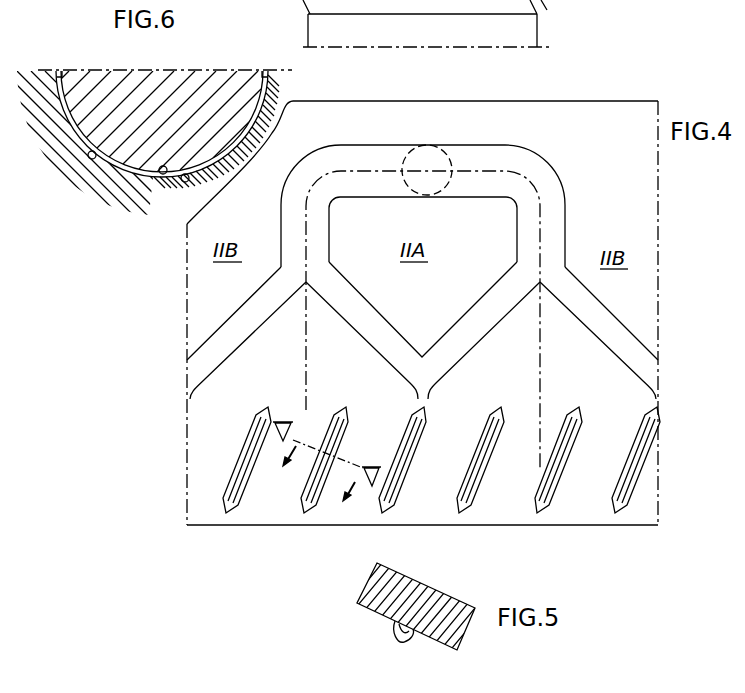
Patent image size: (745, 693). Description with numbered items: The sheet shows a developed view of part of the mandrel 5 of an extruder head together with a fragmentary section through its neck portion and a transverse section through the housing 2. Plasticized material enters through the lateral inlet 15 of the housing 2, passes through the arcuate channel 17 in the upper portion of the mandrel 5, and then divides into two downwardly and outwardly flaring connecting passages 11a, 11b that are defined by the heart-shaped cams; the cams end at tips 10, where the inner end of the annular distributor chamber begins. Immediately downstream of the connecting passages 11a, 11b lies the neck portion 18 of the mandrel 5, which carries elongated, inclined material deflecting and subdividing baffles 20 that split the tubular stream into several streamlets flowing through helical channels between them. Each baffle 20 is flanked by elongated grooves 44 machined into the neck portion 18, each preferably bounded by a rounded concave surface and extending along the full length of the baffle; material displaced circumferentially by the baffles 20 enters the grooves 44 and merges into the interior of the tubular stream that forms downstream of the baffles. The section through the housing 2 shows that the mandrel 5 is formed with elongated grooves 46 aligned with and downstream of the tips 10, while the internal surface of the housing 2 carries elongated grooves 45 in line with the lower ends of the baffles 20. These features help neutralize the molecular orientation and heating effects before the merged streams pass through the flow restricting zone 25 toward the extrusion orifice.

In FIG. 6, the housing 2 is at (82, 152).
In FIG. 6, the mandrel 5 is at (230, 75).
In FIG. 4, the tips 10 is at (414, 360).
In FIG. 4, the connecting passage 11a is at (222, 333).
In FIG. 4, the connecting passage 11b is at (622, 335).
In FIG. 4, the lateral inlet 15 is at (428, 145).
In FIG. 4, the arcuate channel 17 is at (550, 196).
In FIG. 4, the neck portion 18 is at (597, 472).
In FIG. 5, the neck portion 18 is at (436, 601).
In FIG. 4, the baffles 20 is at (419, 443).
In FIG. 5, the baffles 20 is at (397, 630).
In FIG. 4, the flow restricting zone 25 is at (545, 17).
In FIG. 4, the grooves 44 is at (241, 457).
In FIG. 5, the grooves 44 is at (412, 632).
In FIG. 6, the grooves 45 is at (95, 160).
In FIG. 4, the grooves 45 is at (447, 7).
In FIG. 6, the grooves 46 is at (163, 177).